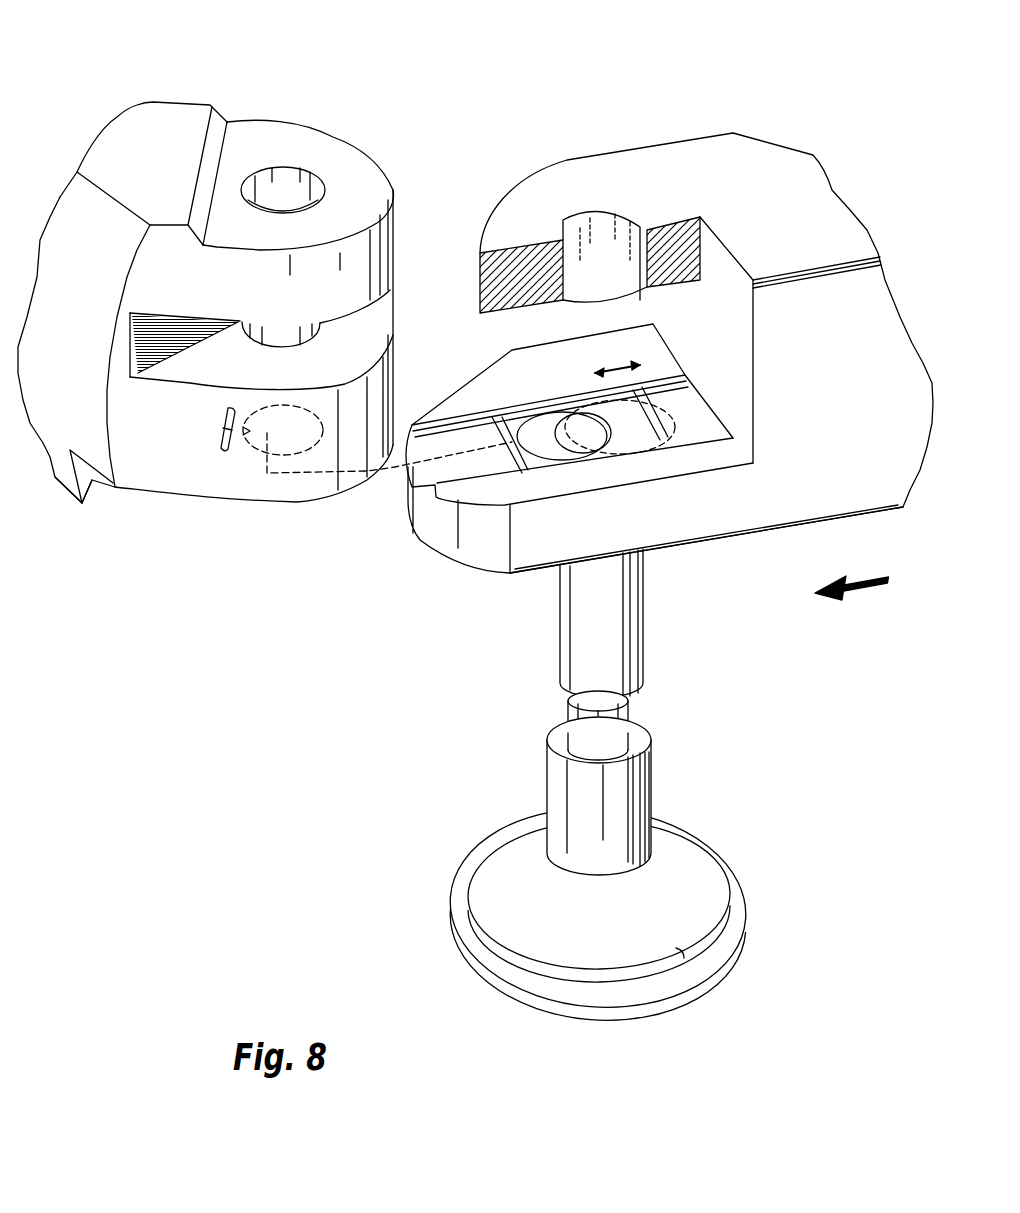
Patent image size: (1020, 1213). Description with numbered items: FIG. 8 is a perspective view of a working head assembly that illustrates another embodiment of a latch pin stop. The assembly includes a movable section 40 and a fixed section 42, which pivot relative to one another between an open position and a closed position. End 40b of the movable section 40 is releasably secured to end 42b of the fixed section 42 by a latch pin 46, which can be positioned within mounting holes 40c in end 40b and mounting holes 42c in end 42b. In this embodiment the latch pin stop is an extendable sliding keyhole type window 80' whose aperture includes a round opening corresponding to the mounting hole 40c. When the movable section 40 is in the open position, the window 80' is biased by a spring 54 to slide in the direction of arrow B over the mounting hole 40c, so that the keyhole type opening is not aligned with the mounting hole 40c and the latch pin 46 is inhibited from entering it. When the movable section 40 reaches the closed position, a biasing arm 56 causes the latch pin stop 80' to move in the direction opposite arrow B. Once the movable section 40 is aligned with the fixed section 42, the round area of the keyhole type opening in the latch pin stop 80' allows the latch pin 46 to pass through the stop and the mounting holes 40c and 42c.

The movable section 40 is at (503, 118).
The end of the movable section 40b is at (703, 520).
The mounting holes 40c is at (594, 220).
The fixed section 42 is at (286, 100).
The end of fixed section 42b is at (130, 463).
The mounting holes 42c is at (268, 330).
The latch pin 46 is at (548, 790).
The spring 54 is at (700, 405).
The biasing arm 56 is at (225, 452).
The sliding keyhole type window 80' is at (550, 380).
The arrow B is at (873, 598).